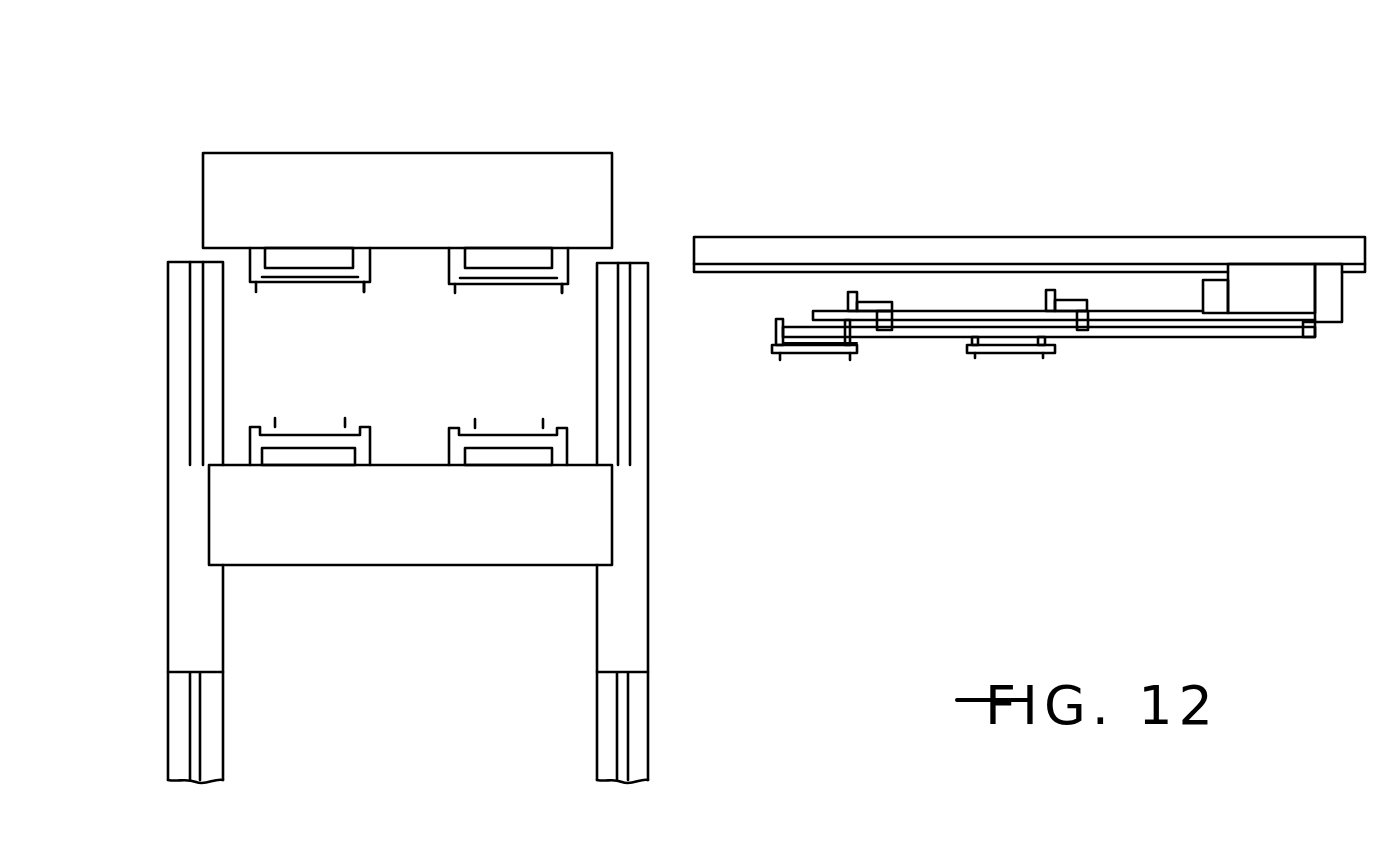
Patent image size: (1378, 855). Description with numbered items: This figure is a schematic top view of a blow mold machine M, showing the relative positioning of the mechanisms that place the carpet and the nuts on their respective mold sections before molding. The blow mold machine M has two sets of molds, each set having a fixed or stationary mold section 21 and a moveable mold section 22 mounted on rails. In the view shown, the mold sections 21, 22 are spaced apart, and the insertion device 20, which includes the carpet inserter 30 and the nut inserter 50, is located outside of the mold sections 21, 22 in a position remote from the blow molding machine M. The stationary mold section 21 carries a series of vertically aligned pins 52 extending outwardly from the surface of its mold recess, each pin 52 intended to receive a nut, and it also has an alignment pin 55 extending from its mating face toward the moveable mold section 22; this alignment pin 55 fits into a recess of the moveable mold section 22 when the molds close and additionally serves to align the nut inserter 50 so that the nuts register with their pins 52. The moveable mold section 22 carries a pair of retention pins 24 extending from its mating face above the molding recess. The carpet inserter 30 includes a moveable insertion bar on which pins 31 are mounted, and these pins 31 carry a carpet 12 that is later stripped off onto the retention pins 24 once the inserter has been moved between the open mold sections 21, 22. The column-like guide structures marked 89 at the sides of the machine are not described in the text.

The blow mold machine M is at (299, 122).
The insertion device 20 is at (1206, 210).
The stationary mold section 21 is at (305, 275).
The moveable mold section 22 is at (307, 440).
The retention pins 24 is at (275, 425).
The carpet inserter 30 is at (1129, 362).
The pins 31 is at (783, 355).
The carpet 12 is at (815, 357).
The nut inserter 50 is at (1113, 298).
The pins 52 is at (350, 291).
The alignment pin 55 is at (375, 293).
The guide column 89 is at (212, 697).